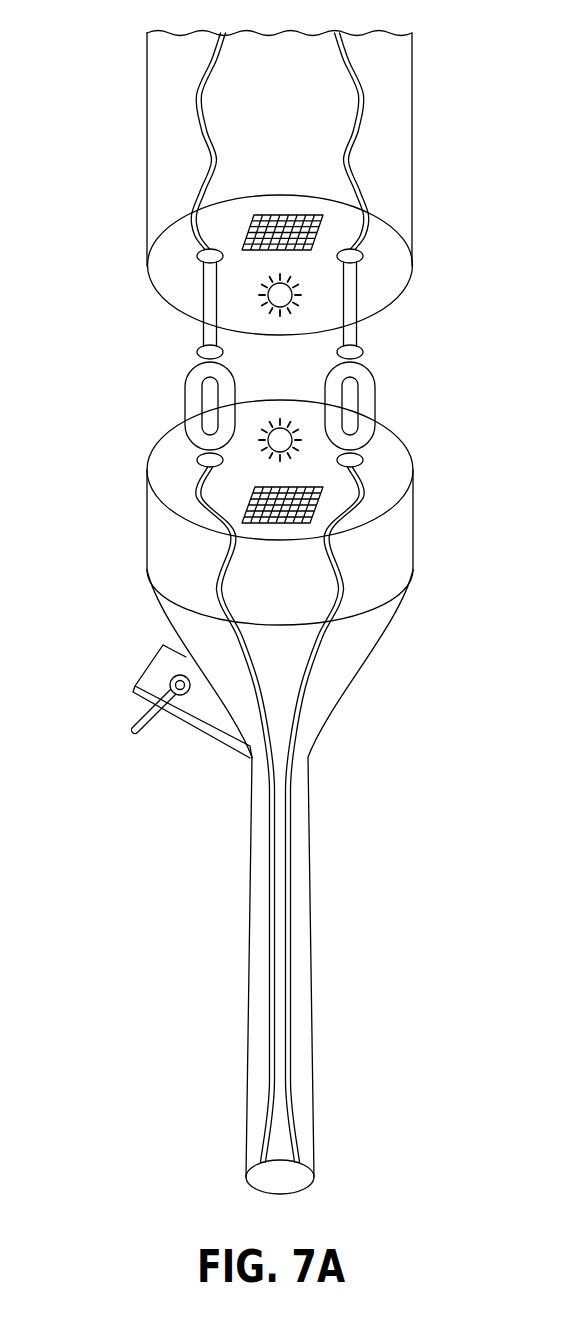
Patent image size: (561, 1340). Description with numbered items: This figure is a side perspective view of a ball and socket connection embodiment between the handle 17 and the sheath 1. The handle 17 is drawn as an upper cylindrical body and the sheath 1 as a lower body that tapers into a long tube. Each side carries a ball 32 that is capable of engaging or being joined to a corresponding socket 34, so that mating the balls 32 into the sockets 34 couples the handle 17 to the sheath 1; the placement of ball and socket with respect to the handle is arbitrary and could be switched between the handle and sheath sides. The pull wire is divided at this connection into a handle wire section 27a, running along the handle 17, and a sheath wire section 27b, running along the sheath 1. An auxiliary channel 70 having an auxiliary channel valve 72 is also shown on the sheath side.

The sheath 1 is at (147, 530).
The handle 17 is at (147, 168).
The handle wire section 27a is at (197, 96).
The sheath wire section 27b is at (293, 895).
The ball 32 is at (202, 336).
The socket 34 is at (186, 393).
The auxiliary channel 70 is at (148, 666).
The auxiliary channel valve 72 is at (145, 719).